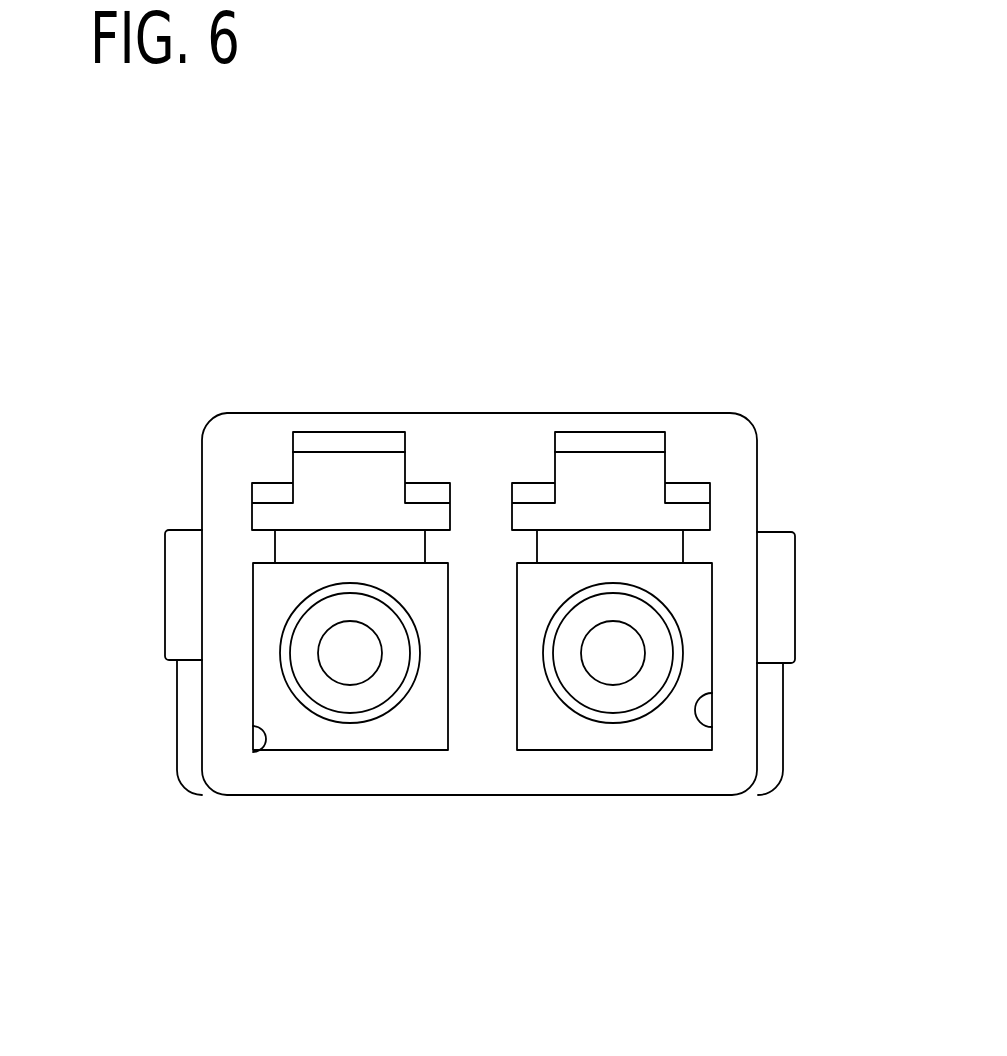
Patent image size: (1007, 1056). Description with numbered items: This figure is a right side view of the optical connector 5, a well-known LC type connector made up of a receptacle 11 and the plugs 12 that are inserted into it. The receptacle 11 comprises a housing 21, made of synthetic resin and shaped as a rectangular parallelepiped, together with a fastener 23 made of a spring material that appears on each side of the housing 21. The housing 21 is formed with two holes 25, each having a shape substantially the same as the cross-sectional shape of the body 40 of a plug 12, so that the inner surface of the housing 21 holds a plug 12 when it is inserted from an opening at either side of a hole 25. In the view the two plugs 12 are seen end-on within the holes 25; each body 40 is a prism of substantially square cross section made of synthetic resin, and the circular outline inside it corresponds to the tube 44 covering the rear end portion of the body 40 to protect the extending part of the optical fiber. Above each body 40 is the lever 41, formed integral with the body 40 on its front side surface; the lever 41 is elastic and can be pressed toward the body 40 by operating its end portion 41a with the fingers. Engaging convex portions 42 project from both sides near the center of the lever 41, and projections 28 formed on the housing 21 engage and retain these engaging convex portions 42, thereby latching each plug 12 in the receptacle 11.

The optical connector 5 is at (488, 167).
The receptacle 11 is at (722, 413).
The plug 12 is at (456, 571).
The housing 21 is at (507, 443).
The fastener 23 is at (175, 650).
The hole 25 is at (265, 750).
The projection 28 is at (290, 480).
The body 40 is at (415, 737).
The lever 41 is at (322, 475).
The end portion 41a is at (360, 440).
The engaging convex portion 42 is at (263, 493).
The tube 44 is at (325, 693).